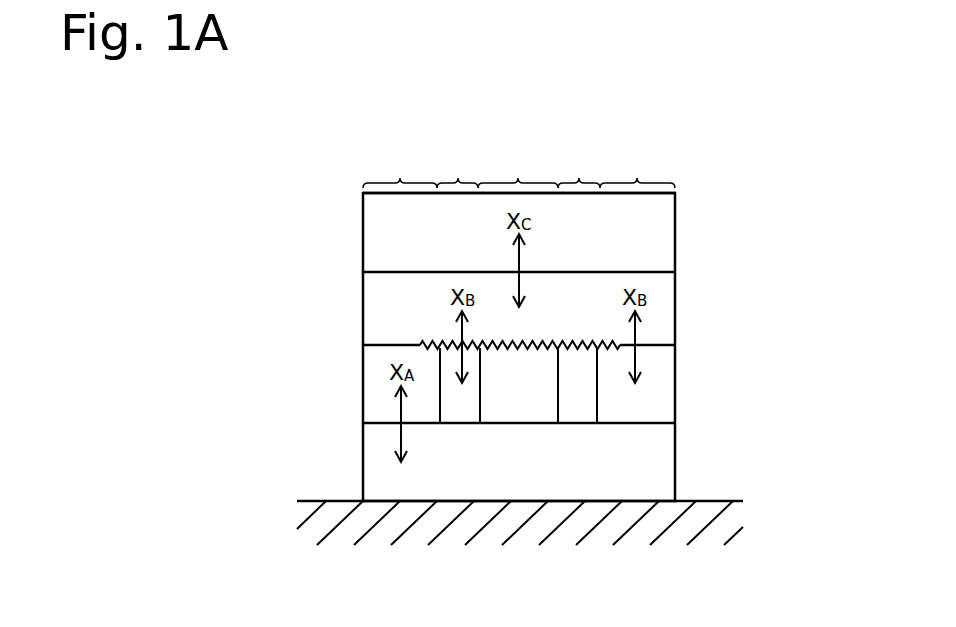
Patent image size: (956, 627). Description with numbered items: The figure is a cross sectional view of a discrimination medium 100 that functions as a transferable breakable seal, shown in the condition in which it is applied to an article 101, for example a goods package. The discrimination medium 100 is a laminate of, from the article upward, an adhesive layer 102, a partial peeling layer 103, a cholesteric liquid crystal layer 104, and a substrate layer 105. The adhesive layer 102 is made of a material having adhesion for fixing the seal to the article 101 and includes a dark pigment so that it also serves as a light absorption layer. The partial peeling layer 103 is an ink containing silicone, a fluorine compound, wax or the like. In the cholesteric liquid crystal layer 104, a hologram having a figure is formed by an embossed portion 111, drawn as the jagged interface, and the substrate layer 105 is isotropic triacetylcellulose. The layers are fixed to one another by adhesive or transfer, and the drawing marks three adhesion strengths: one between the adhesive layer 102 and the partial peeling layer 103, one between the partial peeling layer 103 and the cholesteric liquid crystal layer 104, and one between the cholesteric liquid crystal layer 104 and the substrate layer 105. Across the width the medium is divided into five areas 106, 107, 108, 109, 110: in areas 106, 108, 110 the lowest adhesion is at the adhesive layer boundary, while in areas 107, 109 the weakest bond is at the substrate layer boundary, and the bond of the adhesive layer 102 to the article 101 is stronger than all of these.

The discrimination medium 100 is at (765, 195).
The article 101 is at (311, 500).
The adhesive layer 102 is at (657, 472).
The partial peeling layer 103 is at (683, 348).
The cholesteric liquid crystal layer 104 is at (657, 315).
The substrate layer 105 is at (657, 235).
The area 106 is at (400, 168).
The area 107 is at (457, 167).
The area 108 is at (518, 168).
The area 109 is at (576, 167).
The area 110 is at (637, 168).
The embossed portion 111 is at (439, 329).